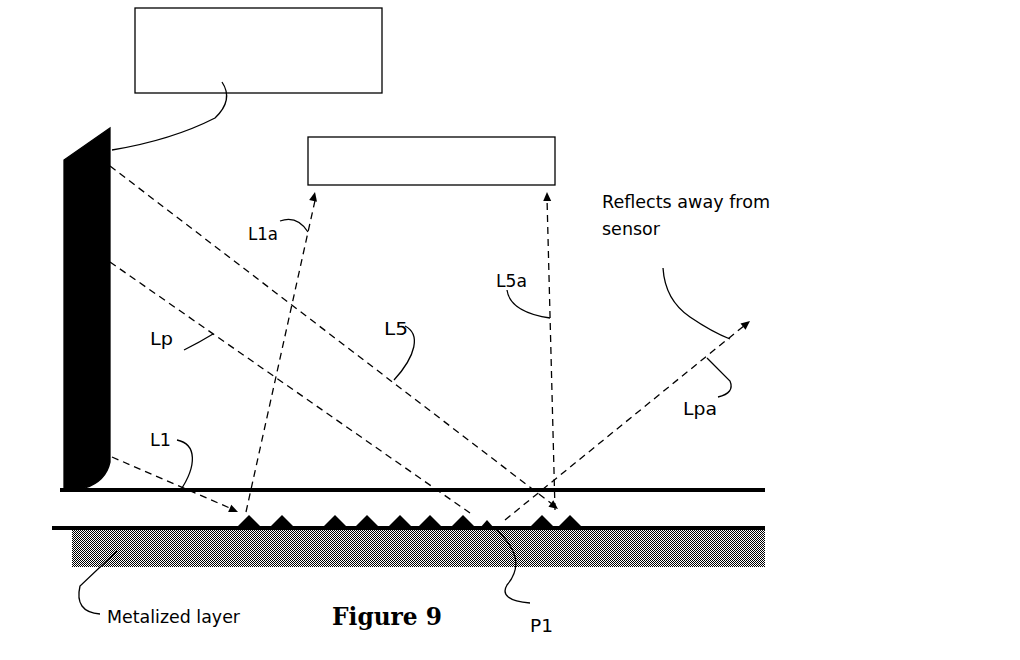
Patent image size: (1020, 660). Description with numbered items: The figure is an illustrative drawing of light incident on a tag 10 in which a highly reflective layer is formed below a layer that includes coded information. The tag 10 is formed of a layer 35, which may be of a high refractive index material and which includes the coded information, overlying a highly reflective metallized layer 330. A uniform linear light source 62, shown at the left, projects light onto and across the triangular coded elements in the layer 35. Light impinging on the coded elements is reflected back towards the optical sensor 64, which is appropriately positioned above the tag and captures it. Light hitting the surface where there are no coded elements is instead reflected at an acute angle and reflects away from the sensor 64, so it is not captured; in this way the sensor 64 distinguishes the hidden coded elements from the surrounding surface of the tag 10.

The tag 10 is at (799, 359).
The uniform linear light source 62 is at (95, 138).
The sensor 64 is at (493, 135).
The layer of material 35 is at (745, 513).
The metallized layer 330 is at (753, 543).